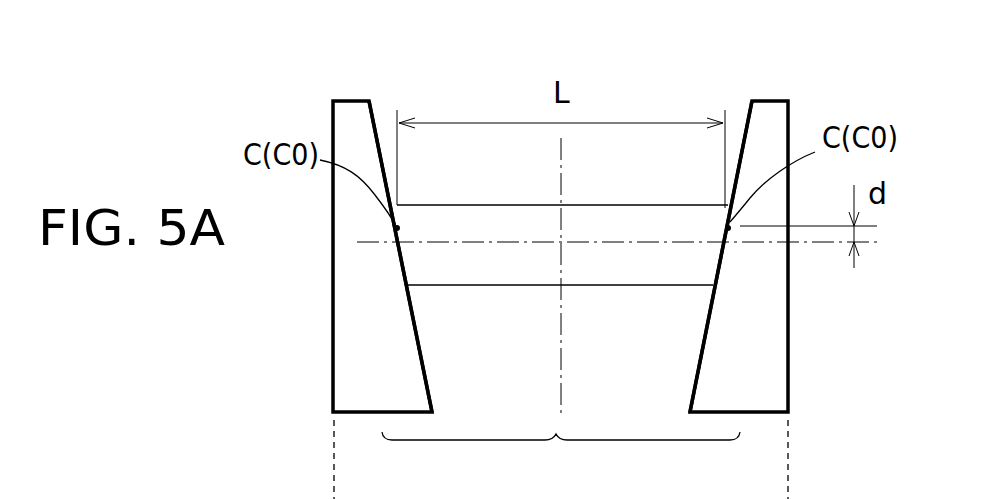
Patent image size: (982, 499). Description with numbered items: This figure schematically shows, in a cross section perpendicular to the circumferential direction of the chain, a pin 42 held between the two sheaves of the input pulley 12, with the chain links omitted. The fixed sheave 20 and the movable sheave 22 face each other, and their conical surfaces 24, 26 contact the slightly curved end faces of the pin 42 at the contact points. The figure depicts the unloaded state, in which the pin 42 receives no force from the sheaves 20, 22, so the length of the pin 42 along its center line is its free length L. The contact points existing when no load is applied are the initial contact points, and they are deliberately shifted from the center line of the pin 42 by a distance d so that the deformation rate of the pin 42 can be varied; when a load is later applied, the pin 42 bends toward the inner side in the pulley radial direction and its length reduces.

The input pulley 12 is at (561, 456).
The fixed sheave 20 is at (772, 352).
The movable sheave 22 is at (350, 352).
The conical surface 24 is at (746, 124).
The conical surface 26 is at (380, 118).
The pin 42 is at (630, 272).